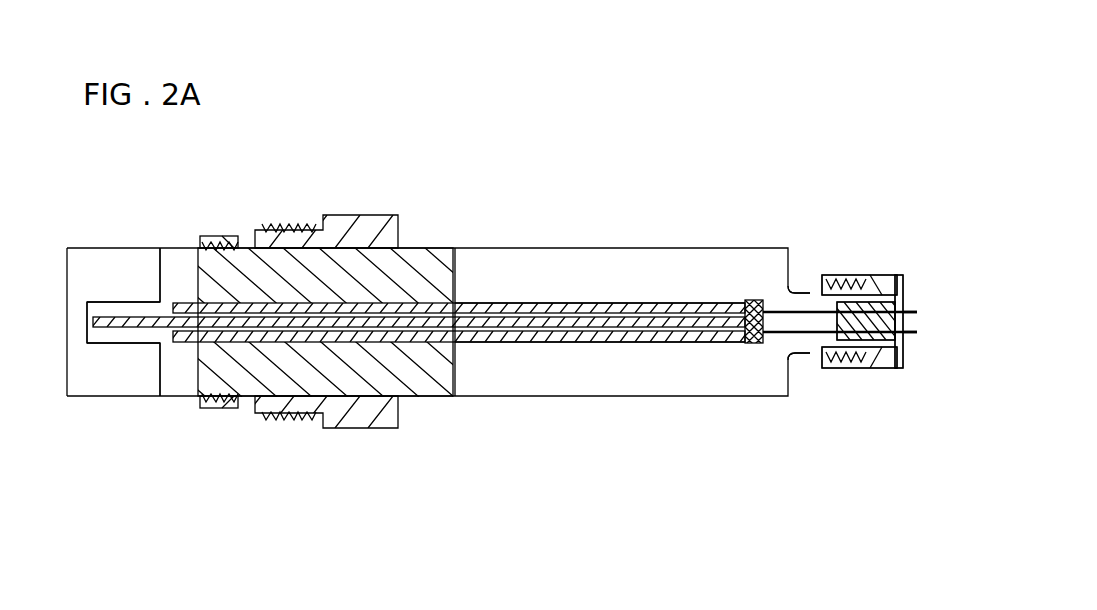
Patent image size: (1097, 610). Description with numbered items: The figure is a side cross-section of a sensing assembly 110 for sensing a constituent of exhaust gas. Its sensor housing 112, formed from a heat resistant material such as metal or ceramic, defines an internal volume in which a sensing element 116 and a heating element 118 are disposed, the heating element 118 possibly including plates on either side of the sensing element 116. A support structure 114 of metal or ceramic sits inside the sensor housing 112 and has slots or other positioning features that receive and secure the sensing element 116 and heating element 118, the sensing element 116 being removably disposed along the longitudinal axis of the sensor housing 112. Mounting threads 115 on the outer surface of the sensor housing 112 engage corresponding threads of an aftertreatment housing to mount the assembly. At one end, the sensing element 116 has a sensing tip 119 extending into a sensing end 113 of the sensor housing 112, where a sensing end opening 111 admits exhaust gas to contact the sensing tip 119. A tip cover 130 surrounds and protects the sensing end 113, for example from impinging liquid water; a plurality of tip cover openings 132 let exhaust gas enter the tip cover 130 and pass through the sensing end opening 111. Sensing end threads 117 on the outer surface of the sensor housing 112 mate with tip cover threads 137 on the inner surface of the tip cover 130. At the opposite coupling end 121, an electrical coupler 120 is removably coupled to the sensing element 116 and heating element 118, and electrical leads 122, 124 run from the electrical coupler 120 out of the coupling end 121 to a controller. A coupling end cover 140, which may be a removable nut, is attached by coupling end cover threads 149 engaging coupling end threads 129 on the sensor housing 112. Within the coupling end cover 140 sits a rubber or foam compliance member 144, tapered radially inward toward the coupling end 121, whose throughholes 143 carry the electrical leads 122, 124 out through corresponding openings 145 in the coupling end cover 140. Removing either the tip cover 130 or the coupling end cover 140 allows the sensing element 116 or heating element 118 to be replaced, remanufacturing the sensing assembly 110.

The sensing assembly 110 is at (698, 127).
The sensing end opening 111 is at (86, 326).
The sensor housing 112 is at (588, 397).
The sensing end 113 is at (122, 301).
The support structure 114 is at (442, 385).
The mounting threads 115 is at (305, 421).
The sensing element 116 is at (482, 343).
The sensing end threads 117 is at (220, 246).
The heating element 118 is at (665, 343).
The sensing tip 119 is at (102, 308).
The electrical coupler 120 is at (753, 299).
The coupling end 121 is at (805, 292).
The electrical lead 122 is at (783, 322).
The electrical lead 124 is at (810, 314).
The coupling end threads 129 is at (858, 363).
The tip cover 130 is at (85, 397).
The tip cover openings 132 is at (140, 397).
The tip cover threads 137 is at (222, 408).
The coupling end cover 140 is at (890, 275).
The throughholes 143 is at (898, 275).
The compliance member 144 is at (880, 345).
The openings 145 is at (906, 306).
The coupling end cover threads 149 is at (837, 275).